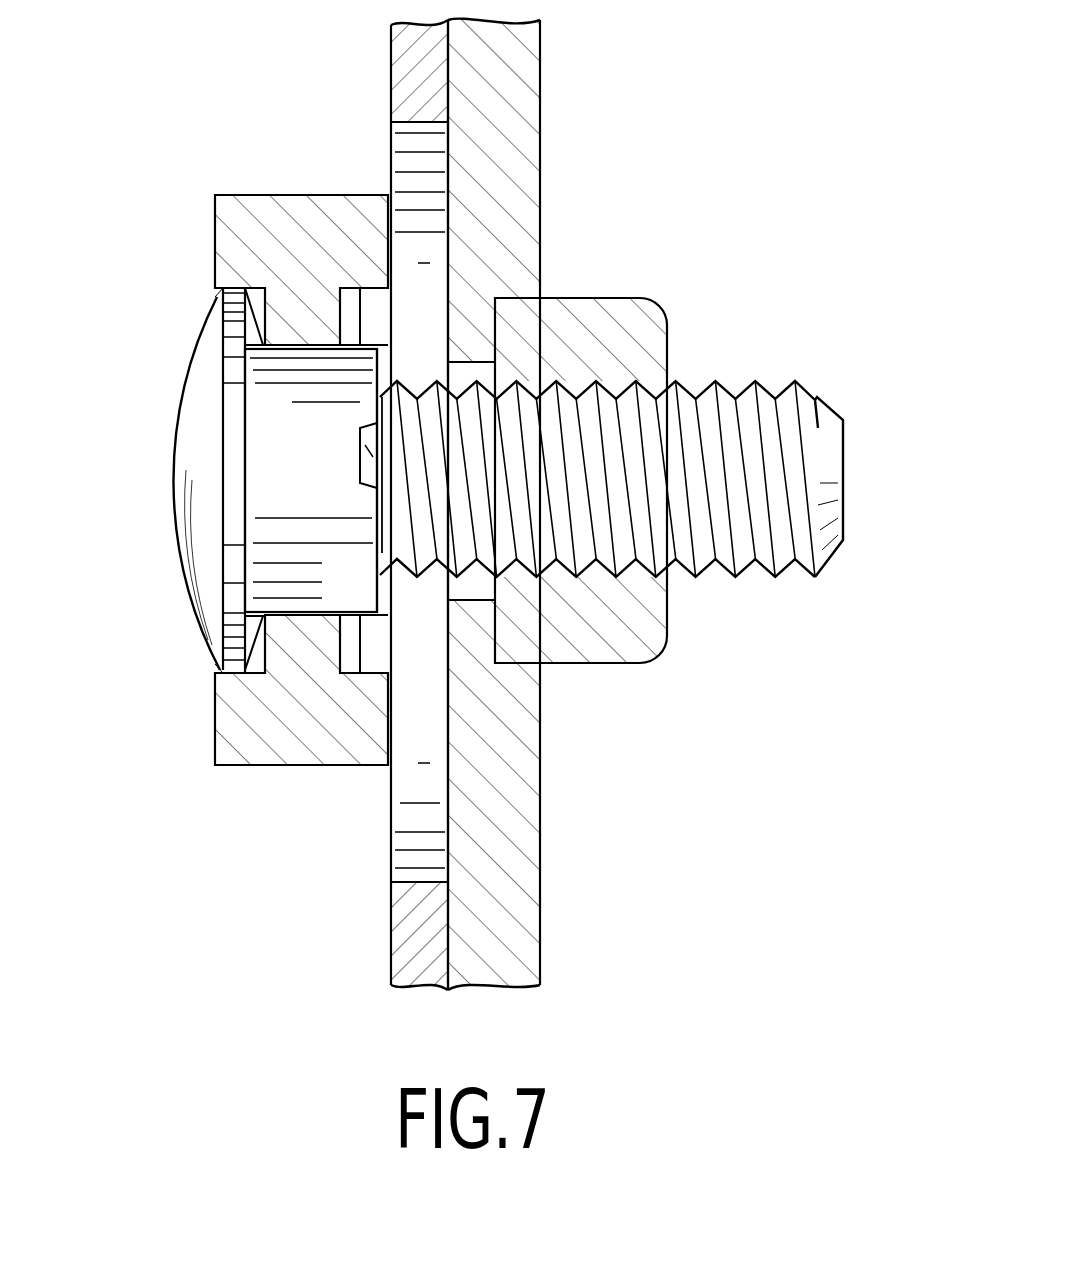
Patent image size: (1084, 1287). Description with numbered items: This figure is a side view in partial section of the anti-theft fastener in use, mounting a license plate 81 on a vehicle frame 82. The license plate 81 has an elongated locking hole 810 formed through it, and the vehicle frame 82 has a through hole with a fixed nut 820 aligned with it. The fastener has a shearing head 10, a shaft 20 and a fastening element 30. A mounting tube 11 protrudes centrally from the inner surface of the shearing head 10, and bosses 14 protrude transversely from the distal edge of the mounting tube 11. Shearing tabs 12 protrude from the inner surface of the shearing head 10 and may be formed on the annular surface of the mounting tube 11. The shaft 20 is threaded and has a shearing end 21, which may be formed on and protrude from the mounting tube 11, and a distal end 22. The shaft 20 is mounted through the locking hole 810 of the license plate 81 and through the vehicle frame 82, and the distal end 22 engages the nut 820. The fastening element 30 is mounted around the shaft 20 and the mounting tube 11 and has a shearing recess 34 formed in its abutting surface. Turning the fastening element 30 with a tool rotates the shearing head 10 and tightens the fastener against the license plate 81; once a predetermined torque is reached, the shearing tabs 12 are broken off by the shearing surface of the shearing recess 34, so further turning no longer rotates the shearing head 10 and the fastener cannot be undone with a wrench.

The shearing head 10 is at (167, 418).
The mounting tube 11 is at (262, 553).
The shearing tab 12 is at (250, 623).
The bosses 14 is at (370, 458).
The shaft 20 is at (616, 504).
The shearing end 21 is at (408, 556).
The distal end 22 is at (802, 402).
The fastening element 30 is at (178, 177).
The shearing recess 34 is at (232, 298).
The license plate 81 is at (405, 55).
The locking hole 810 is at (408, 125).
The vehicle frame 82 is at (527, 82).
The nut 820 is at (638, 312).